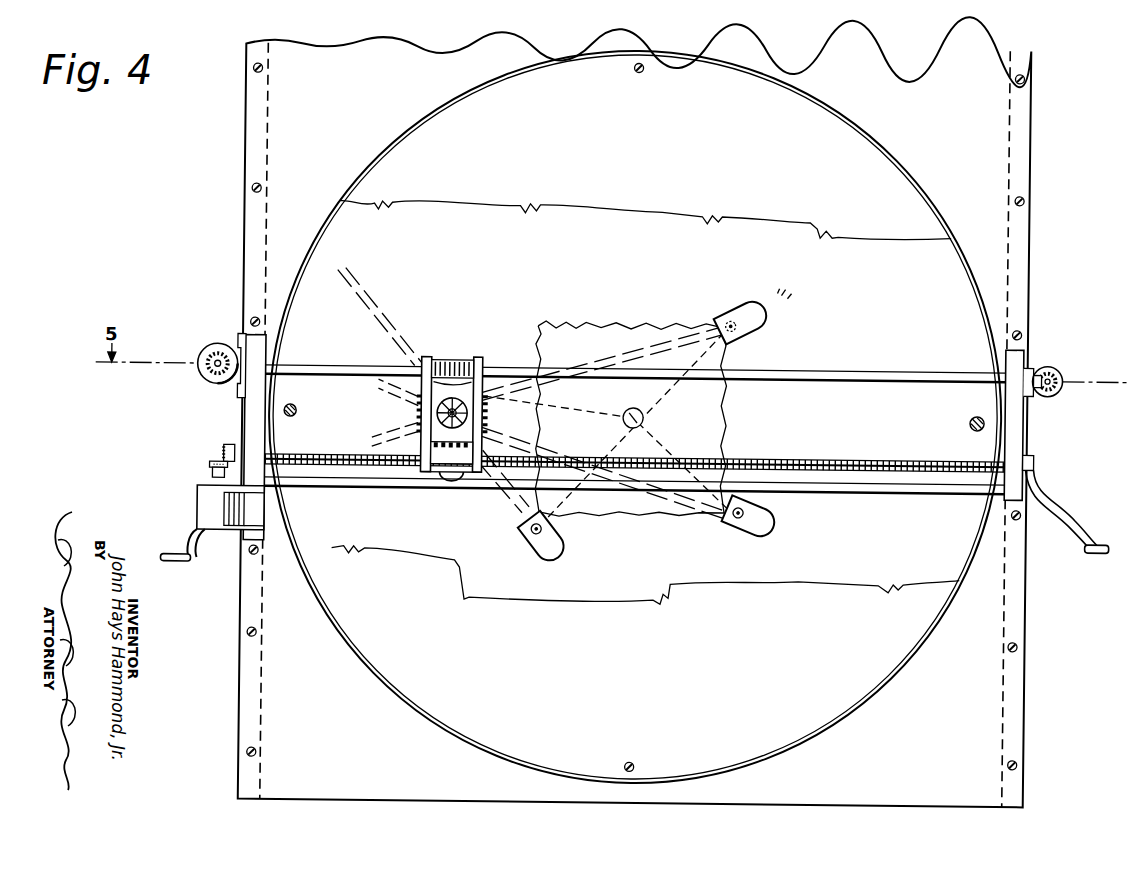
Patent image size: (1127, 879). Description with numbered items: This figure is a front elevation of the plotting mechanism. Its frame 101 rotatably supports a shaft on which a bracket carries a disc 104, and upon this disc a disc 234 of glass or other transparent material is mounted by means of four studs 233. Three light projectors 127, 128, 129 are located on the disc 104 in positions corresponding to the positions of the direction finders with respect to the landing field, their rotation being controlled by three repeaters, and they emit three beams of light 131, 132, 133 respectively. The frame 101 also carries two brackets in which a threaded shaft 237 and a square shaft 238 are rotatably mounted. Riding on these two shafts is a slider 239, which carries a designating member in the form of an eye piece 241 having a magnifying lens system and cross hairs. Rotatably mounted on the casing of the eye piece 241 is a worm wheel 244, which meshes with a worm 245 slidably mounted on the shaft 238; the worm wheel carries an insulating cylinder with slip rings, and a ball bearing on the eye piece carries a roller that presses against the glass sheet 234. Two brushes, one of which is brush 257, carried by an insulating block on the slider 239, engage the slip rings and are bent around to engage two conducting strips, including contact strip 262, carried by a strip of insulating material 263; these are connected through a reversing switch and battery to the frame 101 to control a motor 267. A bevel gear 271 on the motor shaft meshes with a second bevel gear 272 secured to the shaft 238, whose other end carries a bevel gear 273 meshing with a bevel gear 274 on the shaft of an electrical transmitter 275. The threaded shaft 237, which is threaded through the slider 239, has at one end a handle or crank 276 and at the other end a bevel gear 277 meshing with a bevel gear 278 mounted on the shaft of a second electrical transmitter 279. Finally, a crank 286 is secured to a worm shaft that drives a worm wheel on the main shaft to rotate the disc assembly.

The frame 101 is at (243, 146).
The disc 104 is at (935, 262).
The light projector 127 is at (566, 548).
The light projector 128 is at (776, 511).
The light projector 129 is at (762, 313).
The beam of light 131 is at (516, 503).
The beam of light 132 is at (665, 500).
The beam of light 133 is at (630, 342).
The stud 233 is at (297, 410).
The transparent disc 234 is at (846, 142).
The threaded shaft 237 is at (912, 459).
The square shaft 238 is at (862, 369).
The slider 239 is at (478, 478).
The eye piece 241 is at (470, 392).
The worm wheel 244 is at (418, 416).
The worm 245 is at (449, 360).
The brush 257 is at (466, 496).
The contact strip 262 is at (437, 505).
The insulating strip 263 is at (425, 495).
The motor 267 is at (1057, 366).
The bevel gear 271 is at (1041, 396).
The bevel gear 272 is at (1037, 361).
The bevel gear 273 is at (213, 388).
The bevel gear 274 is at (228, 350).
The electrical transmitter 275 is at (205, 357).
The crank 276 is at (1050, 495).
The bevel gear 277 is at (233, 449).
The bevel gear 278 is at (209, 467).
The electrical transmitter 279 is at (197, 493).
The crank 286 is at (190, 564).